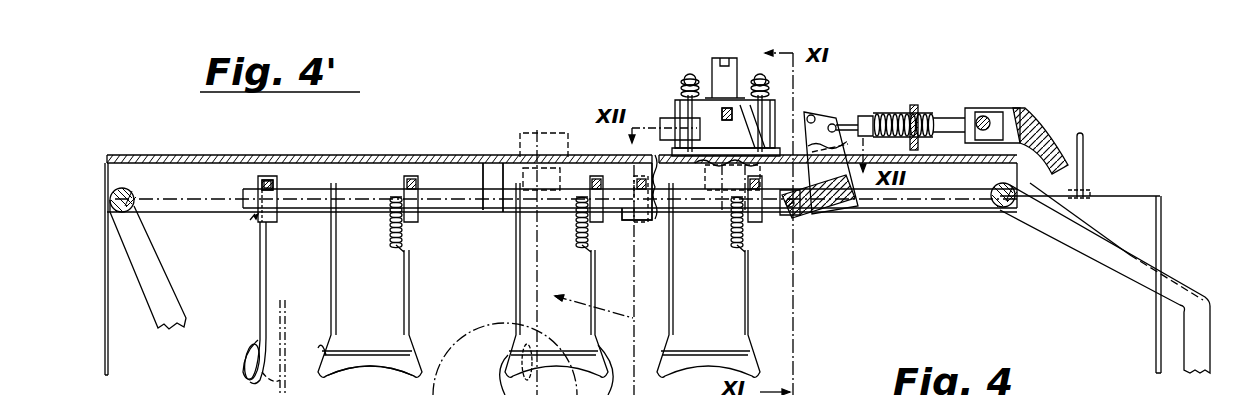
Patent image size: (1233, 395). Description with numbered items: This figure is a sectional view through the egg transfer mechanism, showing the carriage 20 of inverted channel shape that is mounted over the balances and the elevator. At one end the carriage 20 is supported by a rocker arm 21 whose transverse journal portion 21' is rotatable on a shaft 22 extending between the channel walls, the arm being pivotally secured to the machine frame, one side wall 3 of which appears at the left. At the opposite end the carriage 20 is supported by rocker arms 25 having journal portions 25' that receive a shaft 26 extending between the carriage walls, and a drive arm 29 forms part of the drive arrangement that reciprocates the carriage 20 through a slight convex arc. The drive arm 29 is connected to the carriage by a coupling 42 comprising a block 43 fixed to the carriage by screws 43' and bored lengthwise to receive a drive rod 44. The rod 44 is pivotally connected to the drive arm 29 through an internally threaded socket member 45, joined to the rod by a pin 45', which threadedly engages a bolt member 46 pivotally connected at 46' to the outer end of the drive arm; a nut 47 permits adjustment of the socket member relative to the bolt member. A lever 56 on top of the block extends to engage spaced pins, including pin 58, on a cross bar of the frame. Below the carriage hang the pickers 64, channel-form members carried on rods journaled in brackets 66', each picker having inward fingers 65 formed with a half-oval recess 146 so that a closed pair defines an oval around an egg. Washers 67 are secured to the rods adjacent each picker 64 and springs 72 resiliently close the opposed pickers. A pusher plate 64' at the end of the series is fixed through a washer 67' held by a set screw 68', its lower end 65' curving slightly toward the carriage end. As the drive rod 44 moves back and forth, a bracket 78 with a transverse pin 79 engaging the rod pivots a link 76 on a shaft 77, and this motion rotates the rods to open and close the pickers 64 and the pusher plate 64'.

The side wall 3 is at (105, 285).
The carriage 20 is at (325, 155).
The rocker arm 21 is at (157, 267).
The transverse journal portion 21' is at (148, 192).
The shaft 22 is at (112, 194).
The rocker arm 25 is at (1105, 279).
The journal portion 25' is at (983, 185).
The shaft 26 is at (1000, 207).
The drive arm 29 is at (1165, 252).
The coupling 42 is at (690, 63).
The block 43 is at (694, 116).
The screws 43' is at (711, 184).
The drive rod 44 is at (805, 112).
The socket member 45 is at (911, 106).
The pin 45' is at (861, 96).
The bolt member 46 is at (988, 105).
The pivotal connection 46' is at (1022, 125).
The nut 47 is at (918, 110).
The lever 56 is at (474, 188).
The pin 58 is at (1084, 145).
The picker 64 is at (526, 280).
The pusher plate 64' is at (239, 303).
The fingers 65 is at (314, 336).
The lower end 65' is at (238, 346).
The brackets 66' is at (560, 169).
The washer 67 is at (583, 212).
The washer 67' is at (288, 211).
The set screw 68' is at (292, 175).
The spring 72 is at (389, 232).
The link 76 is at (815, 214).
The shaft 77 is at (846, 202).
The bracket 78 is at (828, 161).
The transverse pin 79 is at (815, 119).
The recess 146 is at (366, 374).